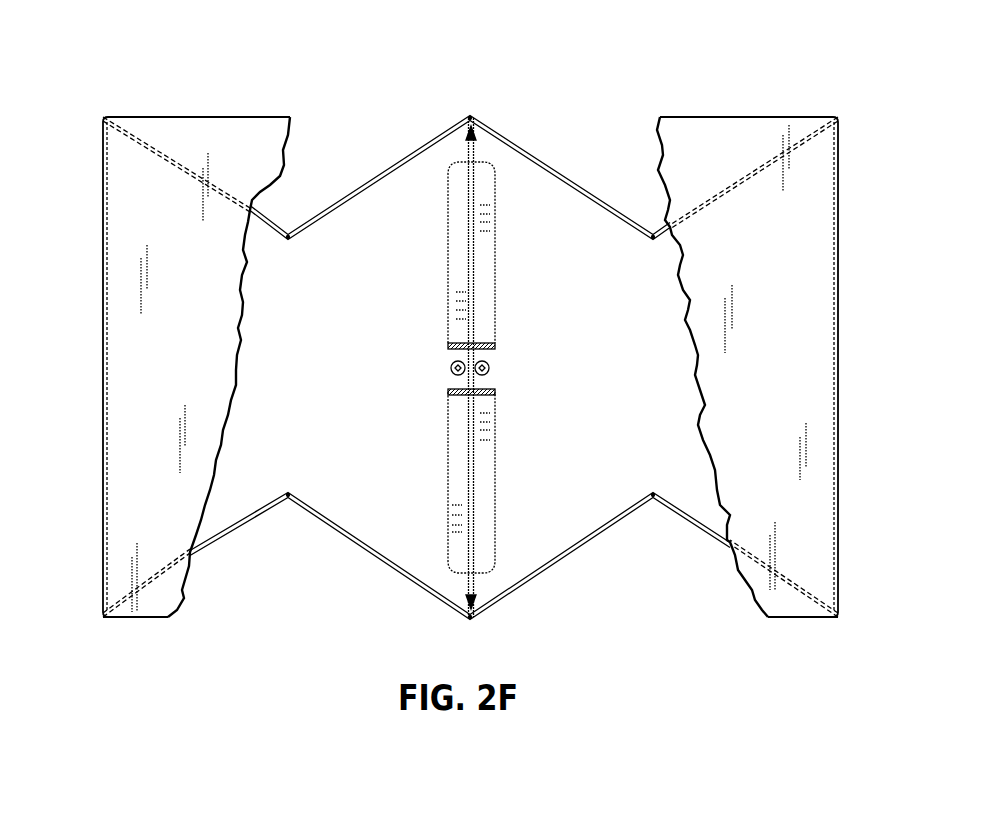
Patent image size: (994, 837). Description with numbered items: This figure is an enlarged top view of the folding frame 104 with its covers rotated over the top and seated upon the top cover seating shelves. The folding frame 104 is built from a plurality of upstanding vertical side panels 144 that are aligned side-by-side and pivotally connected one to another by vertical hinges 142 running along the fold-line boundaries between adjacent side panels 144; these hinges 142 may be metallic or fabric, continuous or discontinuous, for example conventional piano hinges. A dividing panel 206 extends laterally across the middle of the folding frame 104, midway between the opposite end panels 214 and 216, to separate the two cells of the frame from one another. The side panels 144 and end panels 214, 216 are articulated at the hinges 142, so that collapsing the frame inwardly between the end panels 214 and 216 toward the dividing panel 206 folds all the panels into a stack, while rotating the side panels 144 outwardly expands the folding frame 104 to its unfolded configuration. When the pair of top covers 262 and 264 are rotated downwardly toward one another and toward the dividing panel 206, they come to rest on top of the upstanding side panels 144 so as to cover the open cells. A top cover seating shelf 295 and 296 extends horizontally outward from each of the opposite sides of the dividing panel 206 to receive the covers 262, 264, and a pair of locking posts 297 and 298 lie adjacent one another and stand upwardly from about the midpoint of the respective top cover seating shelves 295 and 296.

The folding frame 104 is at (323, 86).
The upstanding vertical side panels 144 is at (395, 160).
The vertical hinges 142 is at (474, 118).
The end panel 216 is at (103, 313).
The end panel 214 is at (842, 312).
The top cover 264 is at (152, 612).
The top cover 262 is at (792, 607).
The top cover seating shelf 296 is at (483, 280).
The top cover seating shelf 295 is at (458, 436).
The locking post 297 is at (451, 367).
The locking post 298 is at (490, 368).
The dividing panel 206 is at (474, 470).